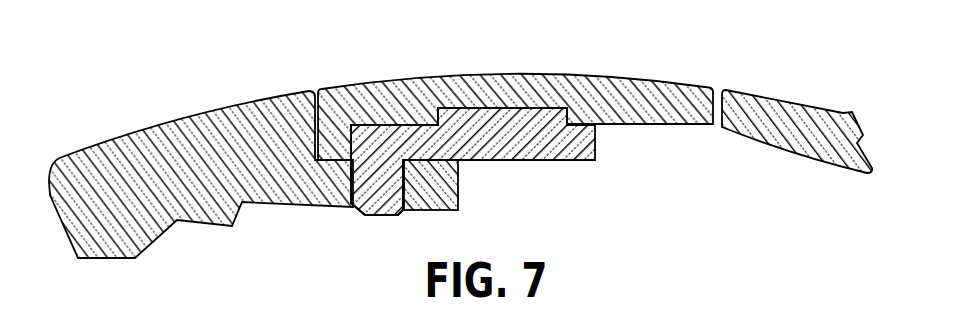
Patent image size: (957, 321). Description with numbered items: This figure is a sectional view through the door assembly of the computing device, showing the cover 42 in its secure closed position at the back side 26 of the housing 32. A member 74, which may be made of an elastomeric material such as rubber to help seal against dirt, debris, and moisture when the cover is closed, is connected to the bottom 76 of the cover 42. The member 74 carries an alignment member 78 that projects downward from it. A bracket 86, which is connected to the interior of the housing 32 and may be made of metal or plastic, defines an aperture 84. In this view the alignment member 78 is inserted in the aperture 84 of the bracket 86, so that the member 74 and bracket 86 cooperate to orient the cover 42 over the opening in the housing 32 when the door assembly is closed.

The back side 26 is at (800, 102).
The housing 32 is at (177, 121).
The cover 42 is at (513, 72).
The member 74 is at (557, 162).
The bottom of cover 76 is at (672, 125).
The alignment member 78 is at (380, 215).
The aperture 84 is at (400, 194).
The bracket 86 is at (459, 185).